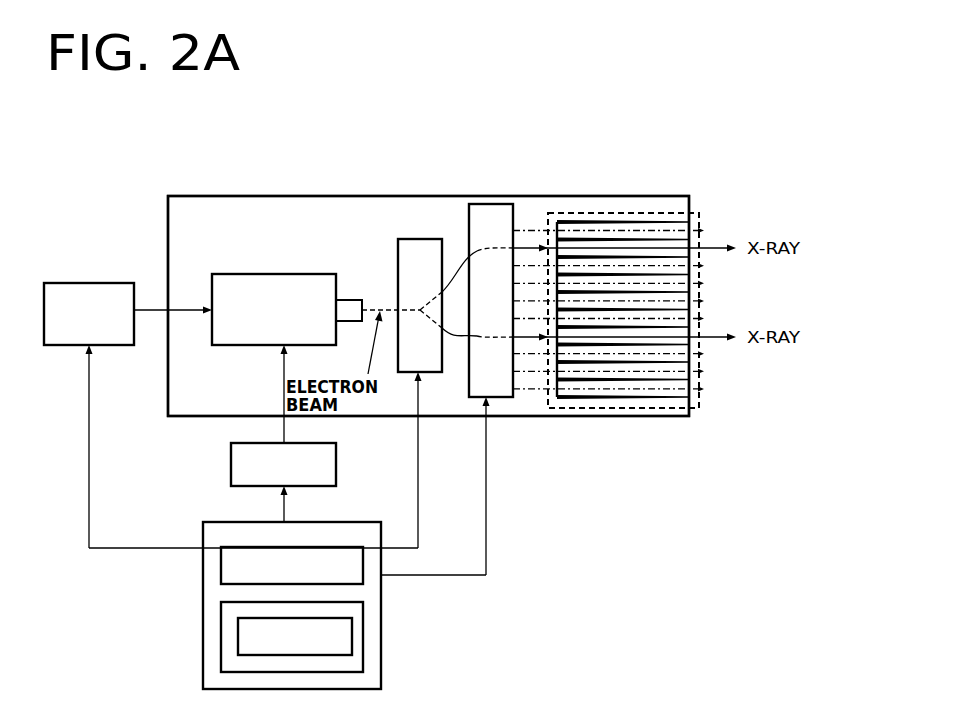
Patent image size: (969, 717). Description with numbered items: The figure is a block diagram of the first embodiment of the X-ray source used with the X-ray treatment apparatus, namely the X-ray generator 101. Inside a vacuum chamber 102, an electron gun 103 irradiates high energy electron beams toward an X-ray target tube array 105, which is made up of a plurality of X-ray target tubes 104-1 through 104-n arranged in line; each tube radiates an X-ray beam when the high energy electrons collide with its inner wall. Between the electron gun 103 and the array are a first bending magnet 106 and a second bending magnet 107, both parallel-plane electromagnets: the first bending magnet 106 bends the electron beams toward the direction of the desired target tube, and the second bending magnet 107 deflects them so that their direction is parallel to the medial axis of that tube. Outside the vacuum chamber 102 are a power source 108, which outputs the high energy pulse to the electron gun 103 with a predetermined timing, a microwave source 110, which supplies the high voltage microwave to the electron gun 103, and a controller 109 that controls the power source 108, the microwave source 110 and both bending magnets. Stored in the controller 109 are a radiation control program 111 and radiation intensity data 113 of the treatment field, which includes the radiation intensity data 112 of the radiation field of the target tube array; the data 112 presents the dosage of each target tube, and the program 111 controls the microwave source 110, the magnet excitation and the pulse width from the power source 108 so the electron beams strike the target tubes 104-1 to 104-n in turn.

The X-ray generator 101 is at (372, 120).
The vacuum chamber 102 is at (221, 196).
The electron gun 103 is at (275, 274).
The X-ray target tube 104-1 is at (662, 227).
The X-ray target tube 104-n is at (647, 390).
The X-ray target tube array 105 is at (592, 213).
The first bending magnet 106 is at (418, 239).
The second bending magnet 107 is at (487, 204).
The power source 108 is at (72, 283).
The controller 109 is at (203, 574).
The microwave source 110 is at (231, 463).
The radiation control program 111 is at (347, 565).
The radiation intensity data of the radiation field 112 is at (347, 637).
The radiation intensity data of the treatment field 113 is at (221, 628).